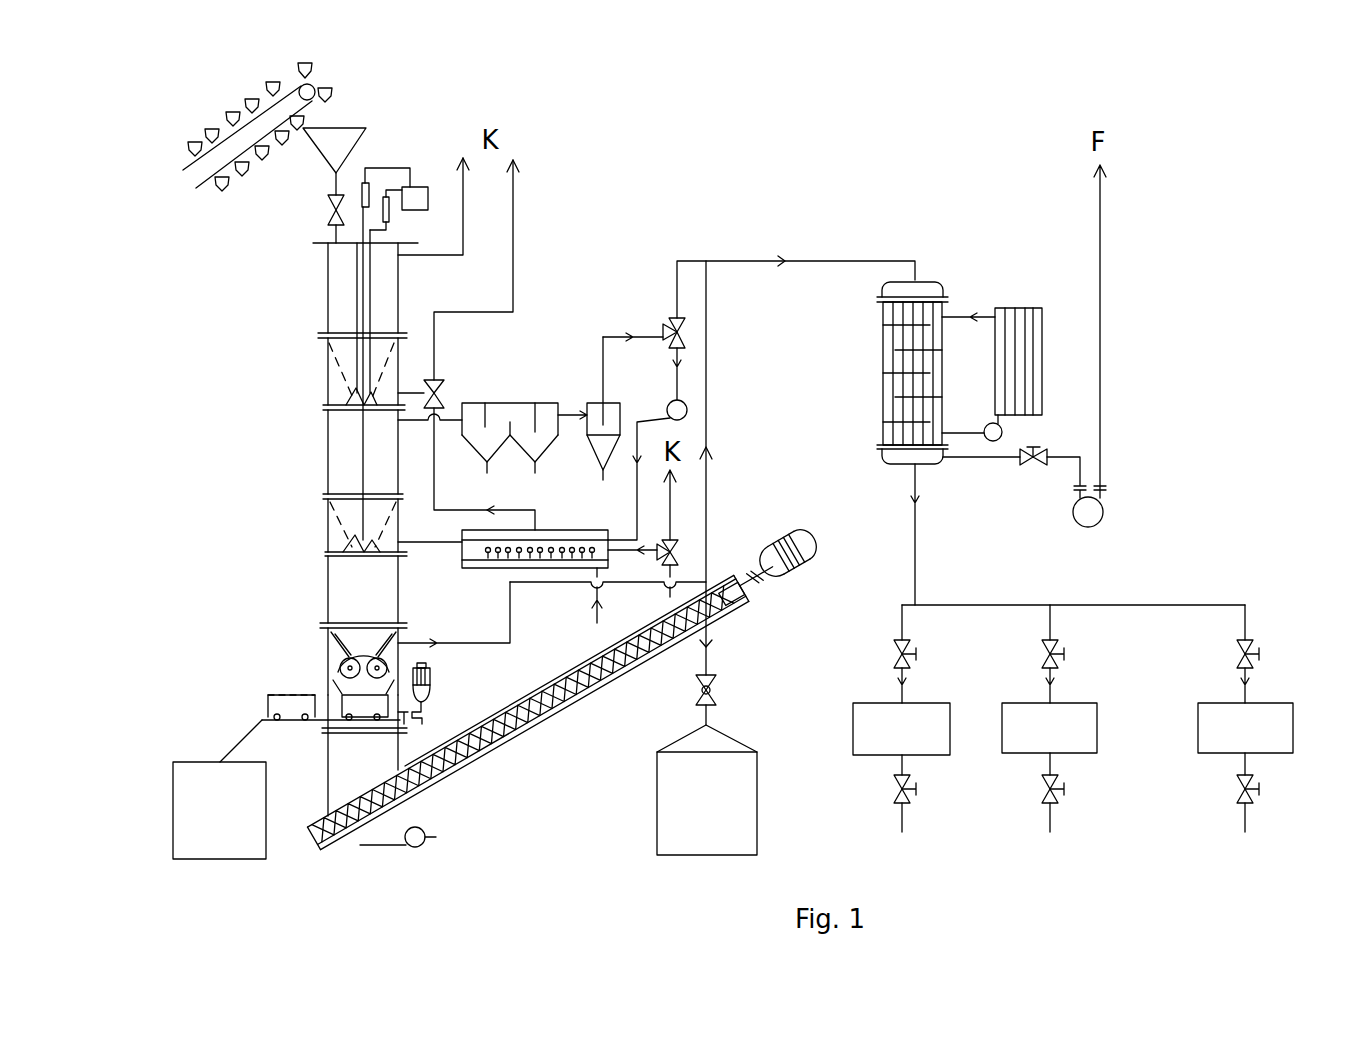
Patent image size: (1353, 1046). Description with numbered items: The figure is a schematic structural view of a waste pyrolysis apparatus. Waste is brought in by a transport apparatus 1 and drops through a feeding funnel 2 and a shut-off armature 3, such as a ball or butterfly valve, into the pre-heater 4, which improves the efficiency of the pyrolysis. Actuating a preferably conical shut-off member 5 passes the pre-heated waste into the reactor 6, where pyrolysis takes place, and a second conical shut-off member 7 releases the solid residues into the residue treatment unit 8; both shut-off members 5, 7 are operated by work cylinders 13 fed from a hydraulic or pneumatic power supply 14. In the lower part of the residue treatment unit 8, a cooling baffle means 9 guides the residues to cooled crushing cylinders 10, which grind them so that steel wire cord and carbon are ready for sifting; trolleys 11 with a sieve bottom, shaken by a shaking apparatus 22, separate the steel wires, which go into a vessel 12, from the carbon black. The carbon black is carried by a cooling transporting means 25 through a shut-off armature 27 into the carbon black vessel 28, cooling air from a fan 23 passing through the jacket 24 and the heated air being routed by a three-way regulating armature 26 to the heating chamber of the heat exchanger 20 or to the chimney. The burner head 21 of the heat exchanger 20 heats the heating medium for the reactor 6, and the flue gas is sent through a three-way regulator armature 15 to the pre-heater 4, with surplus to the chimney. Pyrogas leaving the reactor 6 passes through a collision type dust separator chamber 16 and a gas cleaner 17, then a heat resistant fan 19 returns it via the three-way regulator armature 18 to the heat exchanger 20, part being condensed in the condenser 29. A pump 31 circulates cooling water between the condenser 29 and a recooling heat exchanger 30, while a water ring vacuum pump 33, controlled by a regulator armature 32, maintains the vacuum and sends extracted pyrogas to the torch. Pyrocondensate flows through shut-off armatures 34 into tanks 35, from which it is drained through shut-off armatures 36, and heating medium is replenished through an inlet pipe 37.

The transport apparatus 1 is at (312, 84).
The feeding funnel 2 is at (333, 128).
The shut-off armature 3 is at (328, 210).
The pre-heater 4 is at (343, 288).
The shut-off member 5 is at (350, 393).
The reactor 6 is at (343, 428).
The shut-off member 7 is at (352, 542).
The residue treatment unit 8 is at (347, 568).
The cooling baffle means 9 is at (340, 650).
The crushing cylinders 10 is at (343, 679).
The trolleys 11 is at (337, 688).
The vessel 12 is at (213, 778).
The work cylinders 13 is at (384, 197).
The power supply 14 is at (418, 200).
The three-way regulator armature 15 is at (436, 380).
The collision type dust separator chamber 16 is at (470, 418).
The gas cleaner 17 is at (597, 405).
The three-way regulator armature 18 is at (672, 320).
The heat resistant fan 19 is at (668, 403).
The heat exchanger 20 is at (545, 532).
The burner head 21 is at (500, 563).
The shaking apparatus 22 is at (430, 707).
The fan 23 is at (416, 847).
The jacket 24 is at (467, 770).
The transporting means 25 is at (522, 728).
The three-way regulating armature 26 is at (675, 540).
The shut-off armature 27 is at (717, 689).
The carbon black vessel 28 is at (740, 797).
The condenser 29 is at (925, 287).
The heat exchanger 30 is at (1018, 317).
The pump 31 is at (992, 423).
The regulator armature 32 is at (1035, 468).
The vacuum pump 33 is at (1103, 512).
The shut-off armatures 34 is at (1243, 638).
The tanks 35 is at (1207, 738).
The shut-off armatures 36 is at (1240, 802).
The inlet pipe 37 is at (596, 617).